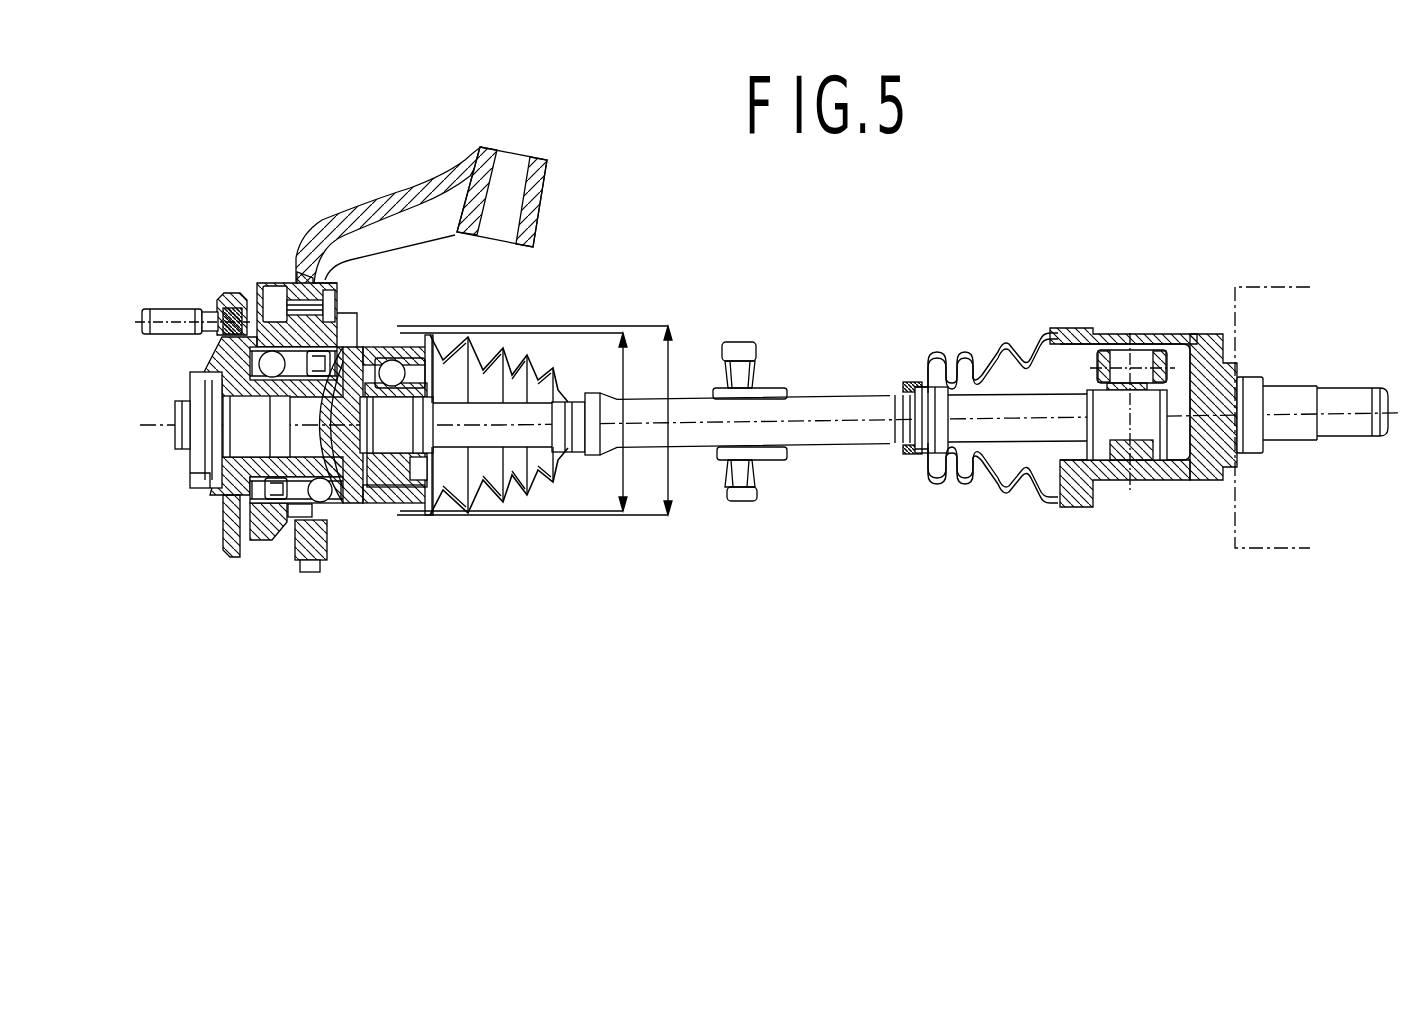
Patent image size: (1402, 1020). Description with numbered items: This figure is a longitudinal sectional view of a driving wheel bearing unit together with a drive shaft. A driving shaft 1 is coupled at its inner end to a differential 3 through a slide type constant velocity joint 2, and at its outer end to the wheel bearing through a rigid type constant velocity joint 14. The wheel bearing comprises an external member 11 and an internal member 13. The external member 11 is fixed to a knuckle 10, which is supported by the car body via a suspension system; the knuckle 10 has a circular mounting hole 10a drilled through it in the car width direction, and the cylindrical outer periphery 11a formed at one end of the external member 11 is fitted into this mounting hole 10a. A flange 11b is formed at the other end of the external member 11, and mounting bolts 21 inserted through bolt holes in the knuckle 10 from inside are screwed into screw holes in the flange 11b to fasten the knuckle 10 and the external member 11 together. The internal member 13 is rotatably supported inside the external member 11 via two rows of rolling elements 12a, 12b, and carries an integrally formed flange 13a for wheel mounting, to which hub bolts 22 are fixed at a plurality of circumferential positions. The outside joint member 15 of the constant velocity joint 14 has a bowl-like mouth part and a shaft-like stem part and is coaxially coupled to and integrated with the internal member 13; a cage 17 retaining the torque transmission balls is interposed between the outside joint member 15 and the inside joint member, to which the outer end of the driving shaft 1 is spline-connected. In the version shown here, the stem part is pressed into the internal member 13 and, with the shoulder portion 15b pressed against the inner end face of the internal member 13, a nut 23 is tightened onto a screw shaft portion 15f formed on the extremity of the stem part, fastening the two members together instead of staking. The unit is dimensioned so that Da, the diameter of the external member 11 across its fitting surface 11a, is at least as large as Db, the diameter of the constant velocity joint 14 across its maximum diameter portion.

The driving shaft 1 is at (826, 395).
The slide type constant velocity joint 2 is at (1104, 333).
The differential 3 is at (1248, 283).
The knuckle 10 is at (407, 190).
The mounting hole 10a is at (313, 512).
The external member 11 is at (272, 534).
The cylindrical outer periphery 11a is at (337, 336).
The flange 11b is at (278, 285).
The rolling elements 12a is at (240, 489).
The rolling elements 12b is at (312, 510).
The internal member 13 is at (190, 375).
The flange 13a is at (233, 292).
The rigid type constant velocity joint 14 is at (503, 542).
The outside joint member 15 is at (393, 493).
The shoulder portion 15b is at (294, 494).
The screw shaft portion 15f is at (178, 434).
The cage 17 is at (400, 352).
The mounting bolts 21 is at (343, 287).
The hub bolts 22 is at (163, 307).
The nut 23 is at (197, 457).
The diameter of the external member across its fitting surface Da is at (683, 480).
The diameter of the constant velocity joint across its maximum diameter portion Db is at (637, 497).